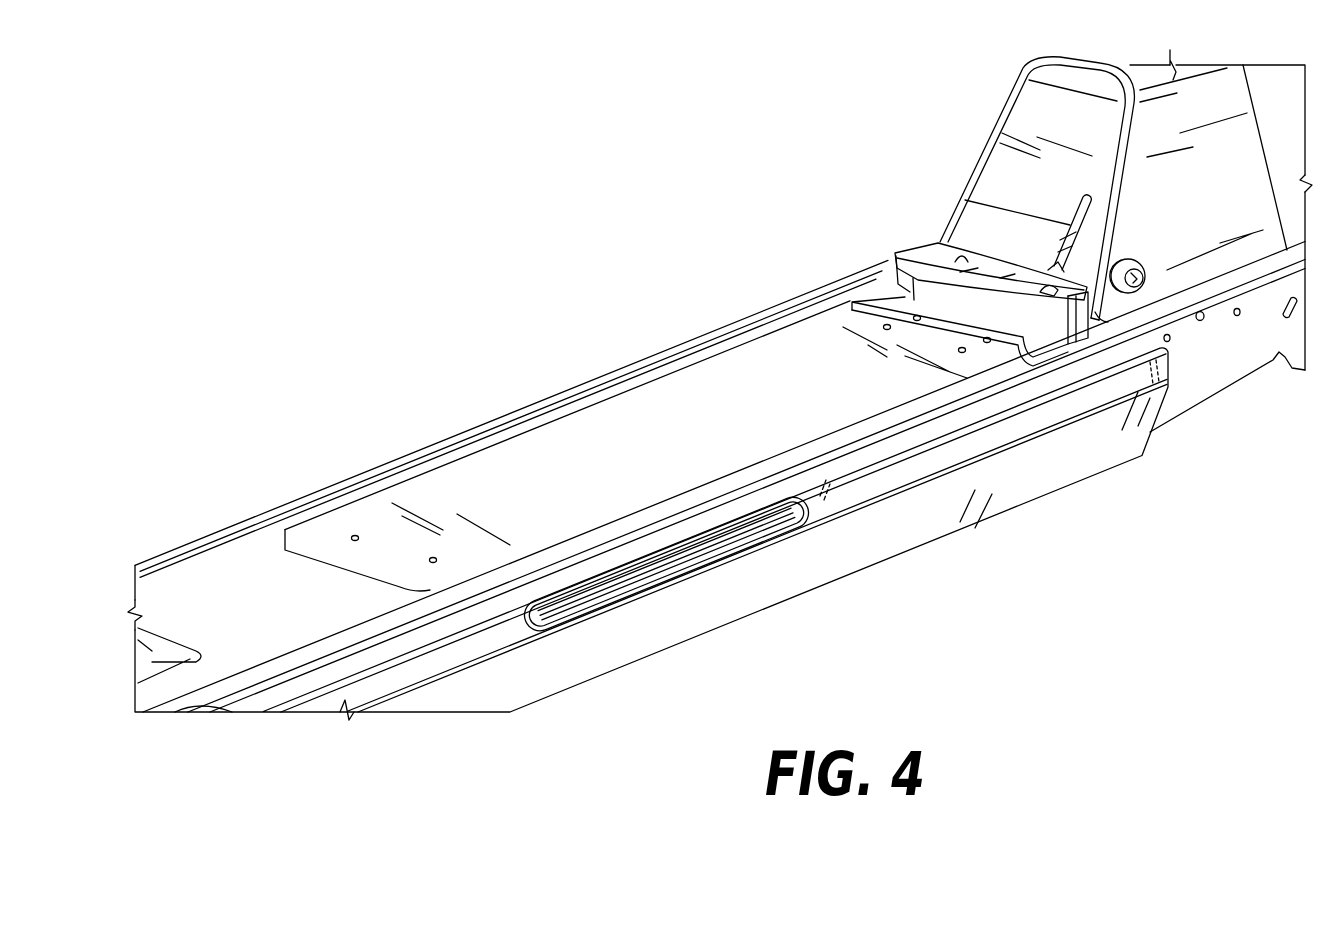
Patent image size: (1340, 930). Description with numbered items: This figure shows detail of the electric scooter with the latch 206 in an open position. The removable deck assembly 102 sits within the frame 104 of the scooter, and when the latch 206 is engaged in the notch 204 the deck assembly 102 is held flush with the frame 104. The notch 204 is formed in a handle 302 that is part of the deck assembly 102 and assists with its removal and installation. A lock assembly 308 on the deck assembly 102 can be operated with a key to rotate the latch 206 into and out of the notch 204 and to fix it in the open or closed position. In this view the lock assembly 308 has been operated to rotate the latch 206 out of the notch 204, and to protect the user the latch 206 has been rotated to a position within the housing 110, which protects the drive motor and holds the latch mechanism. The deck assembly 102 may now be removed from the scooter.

The deck assembly 102 is at (639, 450).
The frame 104 is at (252, 617).
The housing 110 is at (1042, 184).
The notch 204 is at (1052, 284).
The latch 206 is at (1080, 225).
The handle 302 is at (917, 246).
The lock 308 is at (1142, 262).